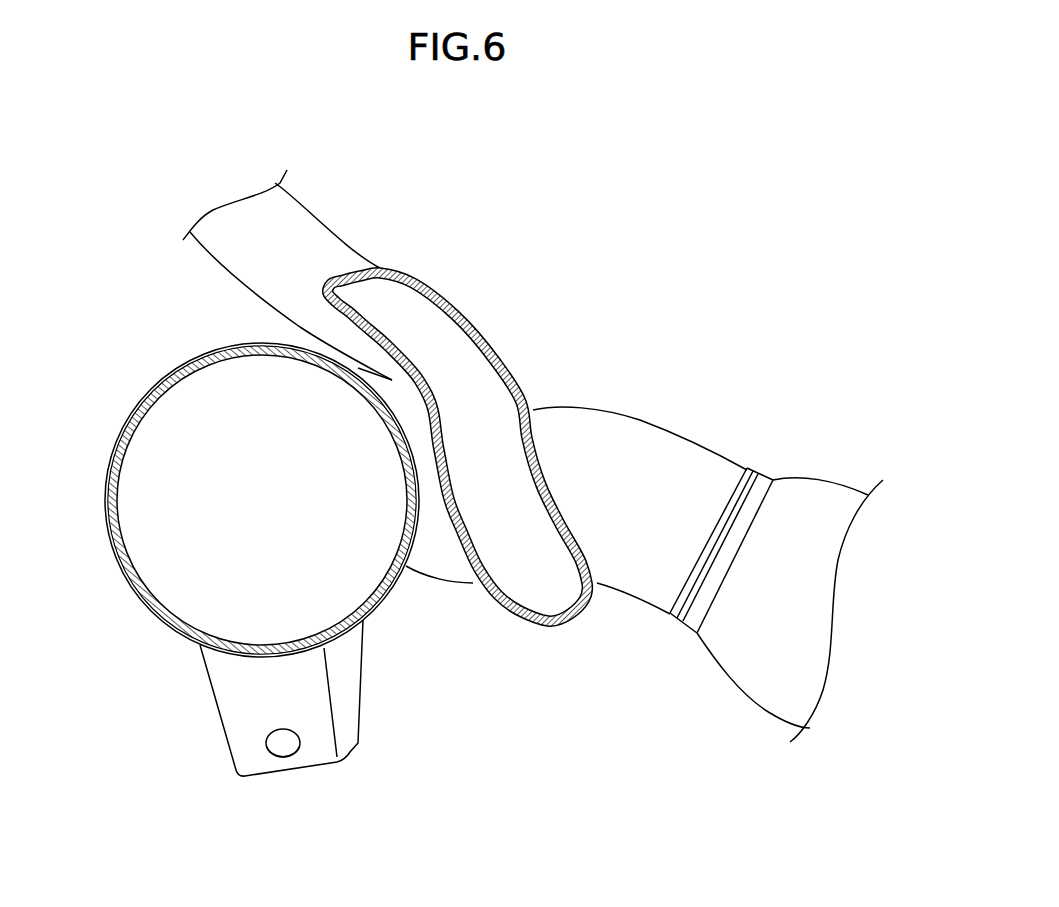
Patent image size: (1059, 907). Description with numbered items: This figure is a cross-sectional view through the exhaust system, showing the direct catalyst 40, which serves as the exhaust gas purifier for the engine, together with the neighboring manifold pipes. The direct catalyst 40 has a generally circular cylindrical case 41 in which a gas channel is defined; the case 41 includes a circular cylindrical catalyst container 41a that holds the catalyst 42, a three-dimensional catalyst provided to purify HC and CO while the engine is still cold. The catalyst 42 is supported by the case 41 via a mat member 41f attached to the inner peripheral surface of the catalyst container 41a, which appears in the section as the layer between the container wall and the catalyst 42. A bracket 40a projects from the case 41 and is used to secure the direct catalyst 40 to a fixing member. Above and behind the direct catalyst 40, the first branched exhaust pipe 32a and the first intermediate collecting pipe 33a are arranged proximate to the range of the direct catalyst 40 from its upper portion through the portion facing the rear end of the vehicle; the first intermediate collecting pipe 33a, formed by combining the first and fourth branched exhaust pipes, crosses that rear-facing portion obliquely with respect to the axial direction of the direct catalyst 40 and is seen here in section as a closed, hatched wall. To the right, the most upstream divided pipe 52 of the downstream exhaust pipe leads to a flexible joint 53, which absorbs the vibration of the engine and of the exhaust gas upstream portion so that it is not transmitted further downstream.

The first branched exhaust pipe 32a is at (312, 232).
The first intermediate collecting pipe 33a is at (527, 633).
The direct catalyst 40 is at (235, 536).
The bracket 40a is at (217, 703).
The case 41 is at (235, 476).
The catalyst container 41a is at (202, 357).
The mat member 41f is at (130, 583).
The catalyst 42 is at (280, 514).
The most upstream divided pipe 52 is at (612, 427).
The flexible joint 53 is at (826, 490).